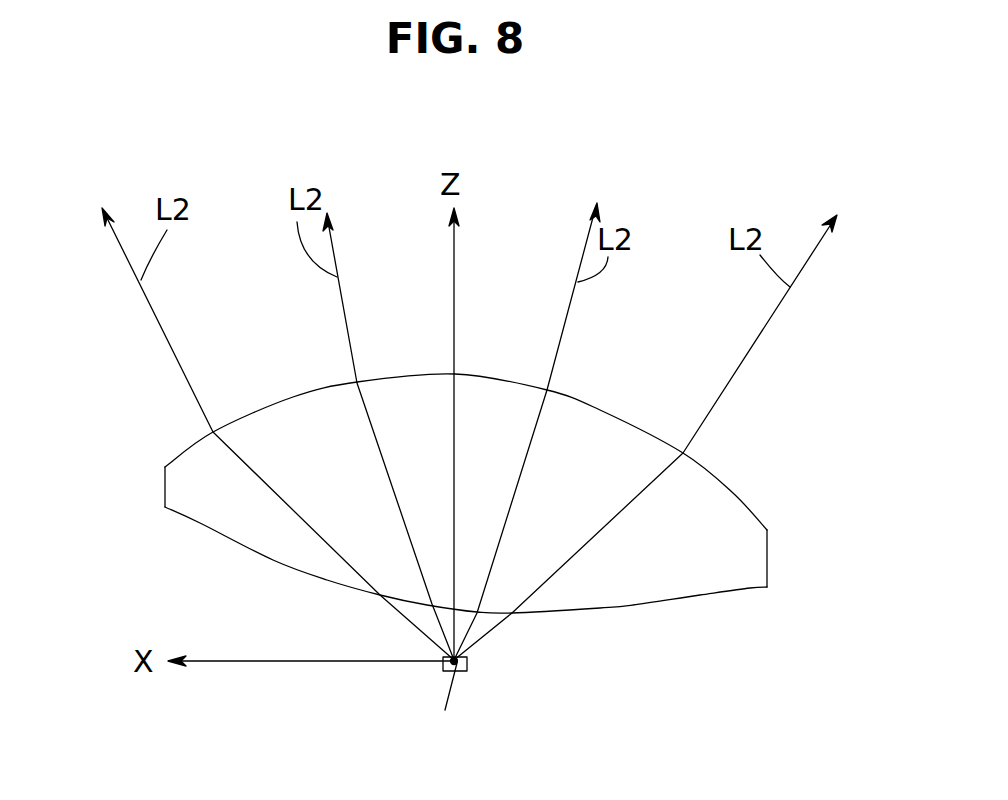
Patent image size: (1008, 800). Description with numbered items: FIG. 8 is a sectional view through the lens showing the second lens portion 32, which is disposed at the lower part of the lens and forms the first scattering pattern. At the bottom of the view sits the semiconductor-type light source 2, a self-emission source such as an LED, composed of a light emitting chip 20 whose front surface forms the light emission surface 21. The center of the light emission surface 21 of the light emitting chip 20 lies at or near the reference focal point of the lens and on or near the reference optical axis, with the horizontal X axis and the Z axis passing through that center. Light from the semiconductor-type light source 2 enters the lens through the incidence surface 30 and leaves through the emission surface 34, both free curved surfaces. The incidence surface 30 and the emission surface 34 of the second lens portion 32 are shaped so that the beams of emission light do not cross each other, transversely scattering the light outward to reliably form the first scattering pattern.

The semiconductor-type light source 2 is at (463, 691).
The light emitting chip 20 is at (468, 672).
The light emission surface 21 is at (463, 658).
The incidence surface 30 is at (200, 527).
The second lens portion 32 is at (456, 509).
The emission surface 34 is at (707, 470).